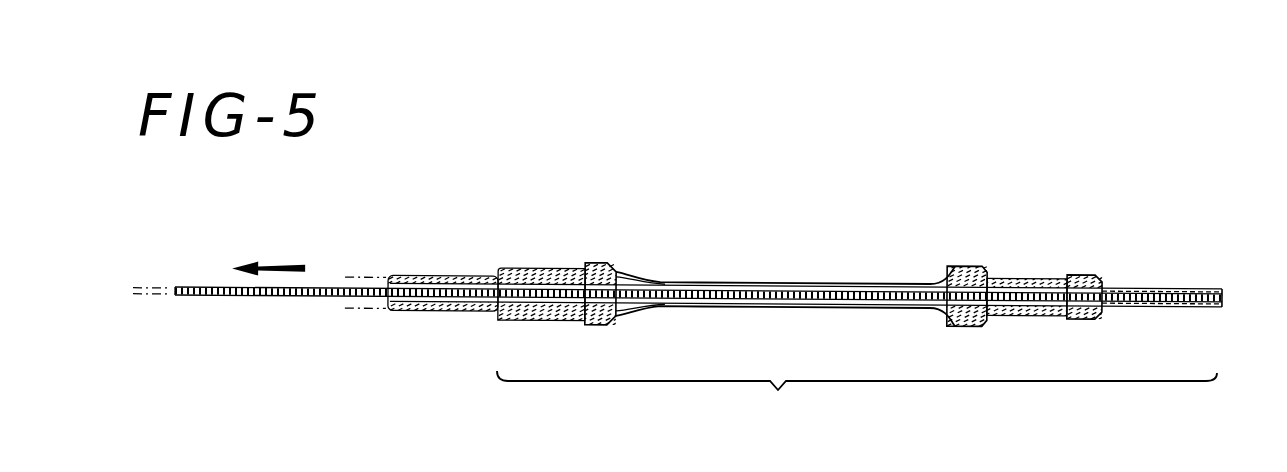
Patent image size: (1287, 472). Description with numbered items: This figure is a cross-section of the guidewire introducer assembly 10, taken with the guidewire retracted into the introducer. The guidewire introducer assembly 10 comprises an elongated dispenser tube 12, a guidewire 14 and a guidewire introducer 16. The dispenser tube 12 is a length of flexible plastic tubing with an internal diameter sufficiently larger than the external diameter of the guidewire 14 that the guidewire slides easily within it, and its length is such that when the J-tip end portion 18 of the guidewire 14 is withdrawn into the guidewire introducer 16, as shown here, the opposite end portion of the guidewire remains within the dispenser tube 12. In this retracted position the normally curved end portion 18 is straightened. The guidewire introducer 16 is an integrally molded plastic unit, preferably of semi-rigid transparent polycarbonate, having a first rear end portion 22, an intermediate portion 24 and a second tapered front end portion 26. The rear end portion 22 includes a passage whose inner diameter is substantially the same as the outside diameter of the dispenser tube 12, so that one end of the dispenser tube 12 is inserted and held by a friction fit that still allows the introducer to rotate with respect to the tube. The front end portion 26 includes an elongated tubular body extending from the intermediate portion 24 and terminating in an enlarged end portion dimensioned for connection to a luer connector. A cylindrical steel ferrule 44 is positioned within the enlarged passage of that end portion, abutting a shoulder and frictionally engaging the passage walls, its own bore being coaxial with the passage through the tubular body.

The guidewire introducer assembly 10 is at (1022, 168).
The dispenser tube 12 is at (419, 309).
The guidewire 14 is at (225, 297).
The guidewire introducer 16 is at (857, 399).
The J-tip end portion 18 is at (1200, 309).
The rear end portion 22 is at (540, 252).
The intermediate portion 24 is at (800, 268).
The tapered front end portion 26 is at (1046, 265).
The ferrule 44 is at (1186, 288).